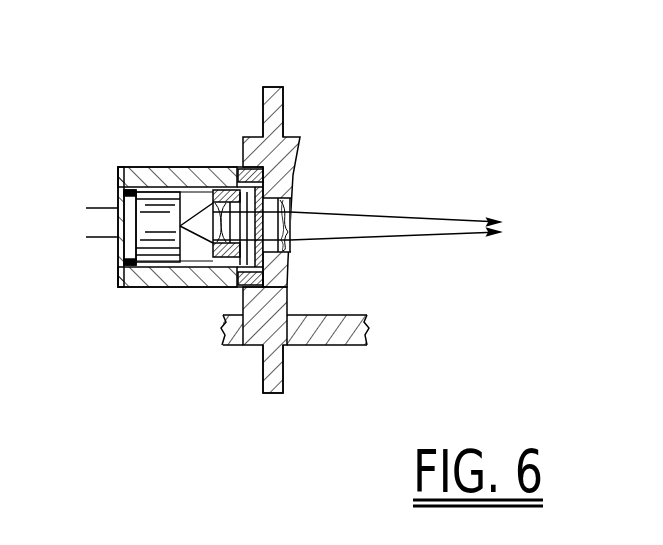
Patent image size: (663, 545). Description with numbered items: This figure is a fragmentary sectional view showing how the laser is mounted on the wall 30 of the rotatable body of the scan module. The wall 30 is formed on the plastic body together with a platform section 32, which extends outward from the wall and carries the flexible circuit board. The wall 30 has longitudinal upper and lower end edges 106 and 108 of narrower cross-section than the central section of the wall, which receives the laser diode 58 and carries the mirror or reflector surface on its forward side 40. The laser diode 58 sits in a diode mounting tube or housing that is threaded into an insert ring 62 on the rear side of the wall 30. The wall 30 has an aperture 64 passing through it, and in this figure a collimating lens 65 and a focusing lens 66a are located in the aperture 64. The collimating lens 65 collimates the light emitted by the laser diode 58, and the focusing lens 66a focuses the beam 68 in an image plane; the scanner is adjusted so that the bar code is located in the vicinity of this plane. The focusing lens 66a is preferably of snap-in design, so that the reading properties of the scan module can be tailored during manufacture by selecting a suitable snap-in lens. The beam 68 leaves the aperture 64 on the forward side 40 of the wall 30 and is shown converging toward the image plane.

The wall 30 is at (288, 152).
The platform section 32 is at (367, 330).
The forward side 40 is at (288, 290).
The laser diode 58 is at (117, 247).
The insert ring 62 is at (243, 168).
The aperture 64 is at (292, 188).
The collimating lens 65 is at (232, 258).
The focusing lens 66a is at (288, 228).
The laser beam 68 is at (413, 228).
The upper edge 106 is at (290, 92).
The lower edge 108 is at (261, 363).